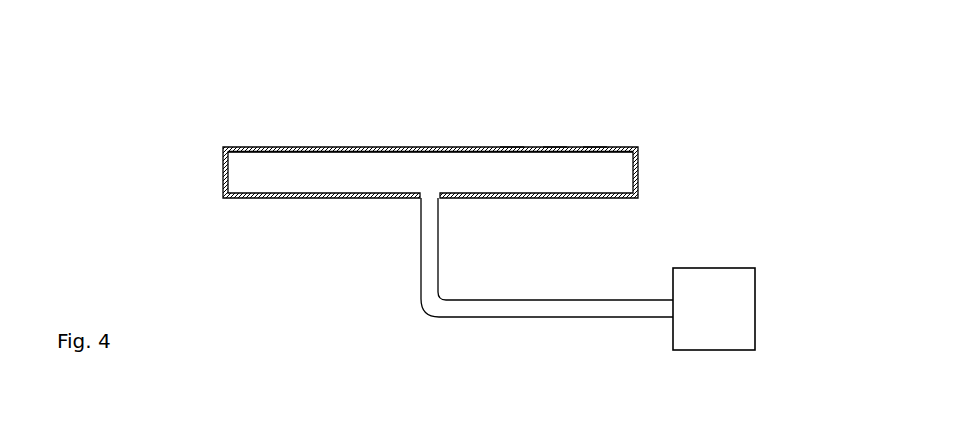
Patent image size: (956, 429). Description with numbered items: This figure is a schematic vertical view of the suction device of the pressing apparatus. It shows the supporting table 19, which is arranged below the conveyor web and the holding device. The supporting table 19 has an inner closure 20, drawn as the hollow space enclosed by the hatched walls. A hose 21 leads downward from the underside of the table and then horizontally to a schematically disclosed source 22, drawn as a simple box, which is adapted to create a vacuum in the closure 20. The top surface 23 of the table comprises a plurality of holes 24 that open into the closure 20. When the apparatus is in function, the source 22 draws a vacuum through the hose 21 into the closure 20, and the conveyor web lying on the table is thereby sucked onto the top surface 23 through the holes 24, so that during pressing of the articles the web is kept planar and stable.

The supporting table 19 is at (638, 168).
The inner closure 20 is at (278, 175).
The hose 21 is at (430, 300).
The source 22 is at (718, 308).
The top surface 23 is at (415, 148).
The holes 24 is at (595, 148).